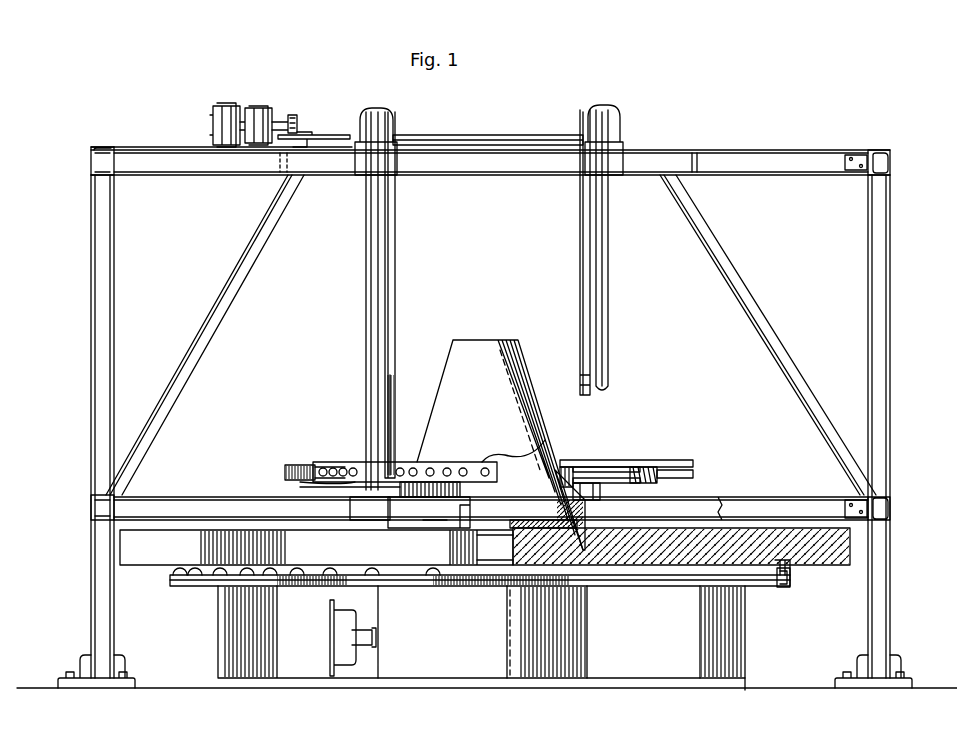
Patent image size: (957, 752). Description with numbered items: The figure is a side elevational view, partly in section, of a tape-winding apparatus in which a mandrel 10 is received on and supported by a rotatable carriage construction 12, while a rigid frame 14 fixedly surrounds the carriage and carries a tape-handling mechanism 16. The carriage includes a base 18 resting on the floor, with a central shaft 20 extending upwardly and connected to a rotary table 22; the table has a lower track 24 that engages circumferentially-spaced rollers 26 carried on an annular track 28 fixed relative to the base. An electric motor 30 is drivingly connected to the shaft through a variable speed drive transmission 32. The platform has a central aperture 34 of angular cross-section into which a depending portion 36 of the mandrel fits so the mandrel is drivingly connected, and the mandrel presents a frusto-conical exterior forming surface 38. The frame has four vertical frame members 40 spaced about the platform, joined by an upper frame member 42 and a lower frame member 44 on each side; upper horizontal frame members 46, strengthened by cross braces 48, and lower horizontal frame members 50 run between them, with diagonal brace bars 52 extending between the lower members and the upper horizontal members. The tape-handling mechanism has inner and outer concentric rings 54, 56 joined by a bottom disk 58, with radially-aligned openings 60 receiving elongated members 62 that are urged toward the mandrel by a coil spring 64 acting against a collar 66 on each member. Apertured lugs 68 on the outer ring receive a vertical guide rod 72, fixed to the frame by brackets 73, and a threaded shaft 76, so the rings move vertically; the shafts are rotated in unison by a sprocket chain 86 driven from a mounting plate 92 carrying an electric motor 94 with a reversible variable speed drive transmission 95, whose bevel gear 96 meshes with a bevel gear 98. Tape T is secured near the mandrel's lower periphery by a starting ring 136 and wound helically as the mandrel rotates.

The mandrel 10 is at (500, 421).
The rotatable carriage construction 12 is at (110, 547).
The rigid frame 14 is at (116, 137).
The tape-handling mechanism 16 is at (643, 465).
The base 18 is at (492, 686).
The central shaft 20 is at (512, 588).
The rotary table 22 is at (157, 565).
The lower track 24 is at (792, 566).
The rollers 26 is at (390, 586).
The annular track 28 is at (432, 586).
The electric motor 30 is at (332, 640).
The variable speed drive transmission 32 is at (518, 655).
The aperture 34 is at (475, 547).
The depending portion 36 is at (508, 523).
The exterior forming surface 38 is at (523, 380).
The vertical frame members 40 is at (92, 378).
The upper frame member 42 is at (93, 165).
The lower frame member 44 is at (92, 498).
The upper horizontal frame members 46 is at (180, 167).
The cross braces 48 is at (287, 175).
The lower horizontal frame members 50 is at (190, 480).
The diagonal brace bars 52 is at (200, 345).
The inner ring 54 is at (636, 465).
The outer ring 56 is at (346, 460).
The bottom disk 58 is at (660, 485).
The openings 60 is at (500, 470).
The elongated members 62 is at (290, 463).
The coil spring 64 is at (588, 498).
The collar 66 is at (652, 465).
The apertured lugs 68 is at (300, 489).
The vertical guide rod 72 is at (364, 327).
The brackets 73 is at (388, 162).
The threaded shaft 76 is at (396, 318).
The sprocket chain 86 is at (495, 135).
The mounting plate 92 is at (190, 128).
The electric motor 94 is at (240, 88).
The reversible variable speed drive transmission 95 is at (262, 106).
The bevel gear 96 is at (292, 114).
The bevel gear 98 is at (310, 130).
The starting ring 136 is at (600, 586).
The tape T is at (450, 478).